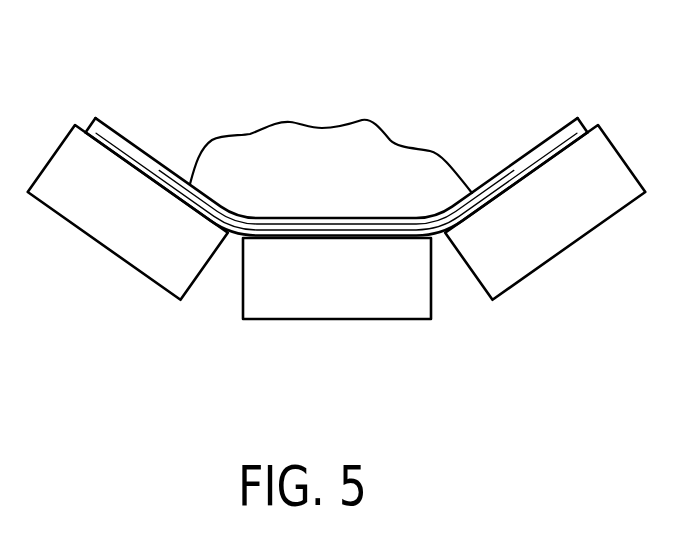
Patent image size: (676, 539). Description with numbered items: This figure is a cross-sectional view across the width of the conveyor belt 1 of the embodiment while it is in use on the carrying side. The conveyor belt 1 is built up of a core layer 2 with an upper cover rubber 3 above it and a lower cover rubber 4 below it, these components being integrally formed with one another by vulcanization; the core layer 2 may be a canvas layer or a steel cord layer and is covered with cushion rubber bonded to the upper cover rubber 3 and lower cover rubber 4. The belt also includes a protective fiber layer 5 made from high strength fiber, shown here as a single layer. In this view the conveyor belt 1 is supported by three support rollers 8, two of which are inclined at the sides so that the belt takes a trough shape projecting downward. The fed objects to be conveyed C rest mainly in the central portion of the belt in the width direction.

The conveyor belt 1 is at (147, 147).
The core layer 2 is at (538, 158).
The upper cover rubber 3 is at (340, 217).
The lower cover rubber 4 is at (270, 238).
The protective fiber layer 5 is at (207, 198).
The support rollers 8 is at (127, 228).
The objects to be conveyed C is at (298, 143).